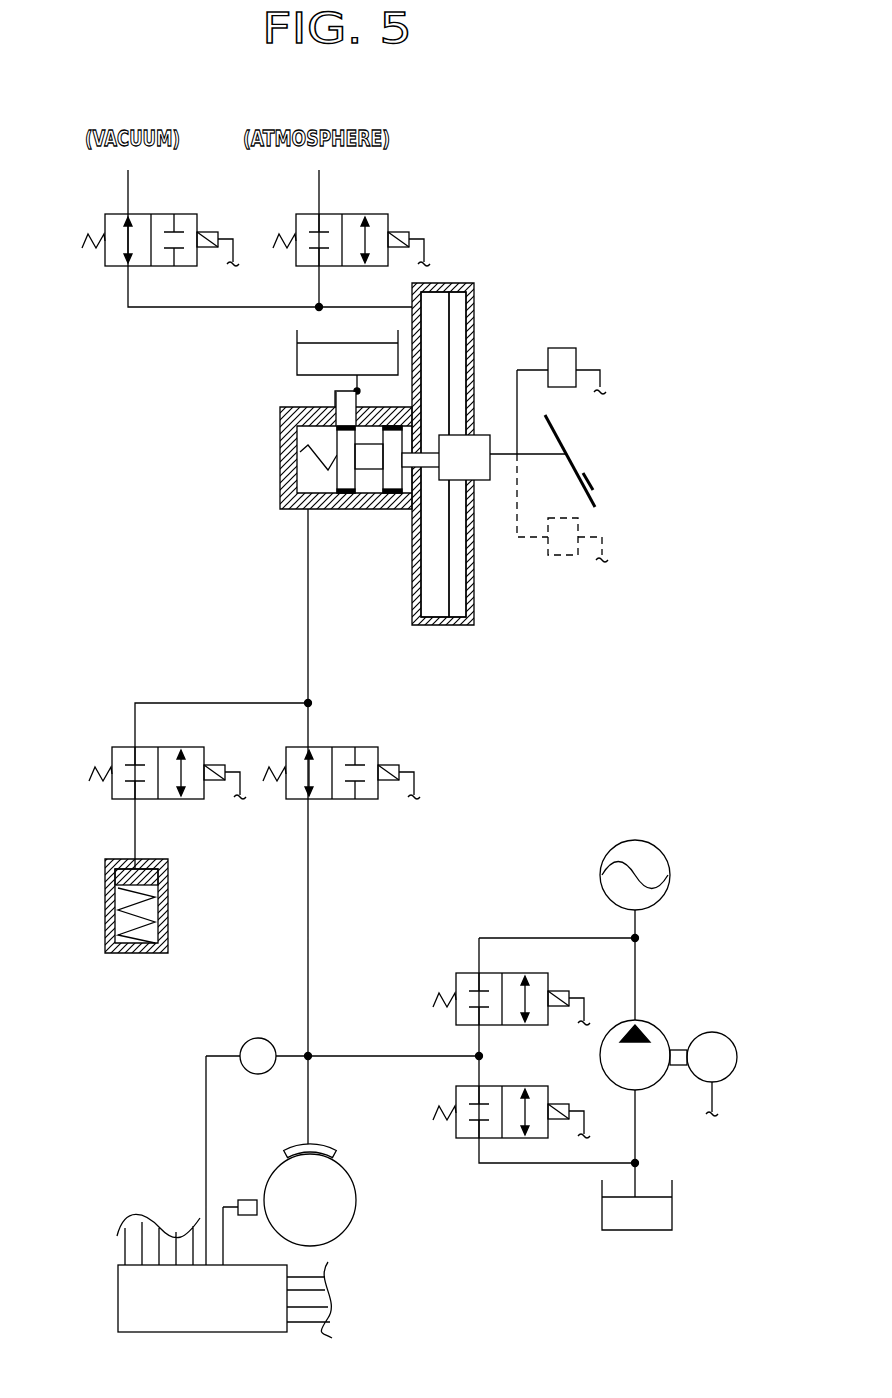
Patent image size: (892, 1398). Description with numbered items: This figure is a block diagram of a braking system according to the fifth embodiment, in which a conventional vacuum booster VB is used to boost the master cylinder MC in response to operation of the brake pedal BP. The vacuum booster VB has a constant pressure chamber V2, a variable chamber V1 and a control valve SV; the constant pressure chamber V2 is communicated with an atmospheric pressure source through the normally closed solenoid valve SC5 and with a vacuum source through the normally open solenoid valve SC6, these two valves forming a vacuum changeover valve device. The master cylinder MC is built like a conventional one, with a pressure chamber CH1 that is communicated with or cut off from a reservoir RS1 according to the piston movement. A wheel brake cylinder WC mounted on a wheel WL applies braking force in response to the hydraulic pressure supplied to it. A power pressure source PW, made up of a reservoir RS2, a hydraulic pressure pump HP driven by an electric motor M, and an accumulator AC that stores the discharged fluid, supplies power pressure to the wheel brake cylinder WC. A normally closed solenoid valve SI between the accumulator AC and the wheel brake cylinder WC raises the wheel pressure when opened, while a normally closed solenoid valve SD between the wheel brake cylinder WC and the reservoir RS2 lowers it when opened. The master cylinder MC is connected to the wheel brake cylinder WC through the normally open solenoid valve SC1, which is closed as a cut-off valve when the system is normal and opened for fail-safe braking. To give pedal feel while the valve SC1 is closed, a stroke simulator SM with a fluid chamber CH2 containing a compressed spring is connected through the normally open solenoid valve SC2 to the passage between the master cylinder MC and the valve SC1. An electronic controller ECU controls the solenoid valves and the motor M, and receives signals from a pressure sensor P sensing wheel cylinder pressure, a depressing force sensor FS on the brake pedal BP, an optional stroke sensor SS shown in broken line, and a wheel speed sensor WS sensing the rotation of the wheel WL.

The normally open solenoid operated switching valve SC6 is at (148, 214).
The normally closed solenoid operated switching valve SC5 is at (340, 214).
The constant pressure chamber V2 is at (430, 305).
The variable chamber V1 is at (454, 322).
The reservoir RS1 is at (306, 356).
The master cylinder MC is at (303, 455).
The pressure chamber CH1 is at (316, 476).
The control valve SV is at (477, 466).
The depressing force sensor FS is at (566, 362).
The brake pedal BP is at (593, 480).
The stroke sensor SS is at (562, 557).
The vacuum booster VB is at (467, 457).
The normally open solenoid operated switching valve SC2 is at (156, 747).
The normally open solenoid operated switching valve SC1 is at (330, 747).
The fluid chamber CH2 is at (106, 918).
The stroke simulator SM is at (135, 958).
The power pressure source PW is at (571, 1051).
The accumulator AC is at (670, 875).
The hydraulic pressure pump HP is at (657, 1033).
The electric motor M is at (703, 1074).
The normally closed solenoid operated switching valve SI is at (462, 972).
The normally closed solenoid operated switching valve SD is at (467, 1137).
The reservoir RS2 is at (607, 1214).
The pressure sensor P is at (258, 1056).
The wheel speed sensor WS is at (247, 1200).
The wheel brake cylinder WC is at (330, 1157).
The wheel WL is at (350, 1213).
The electronic controller ECU is at (224, 1276).